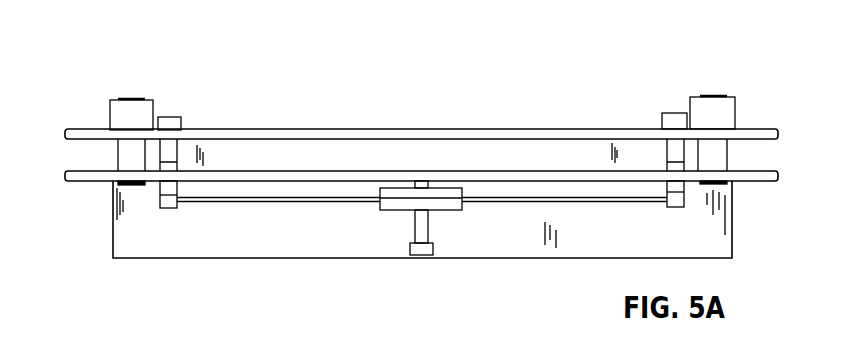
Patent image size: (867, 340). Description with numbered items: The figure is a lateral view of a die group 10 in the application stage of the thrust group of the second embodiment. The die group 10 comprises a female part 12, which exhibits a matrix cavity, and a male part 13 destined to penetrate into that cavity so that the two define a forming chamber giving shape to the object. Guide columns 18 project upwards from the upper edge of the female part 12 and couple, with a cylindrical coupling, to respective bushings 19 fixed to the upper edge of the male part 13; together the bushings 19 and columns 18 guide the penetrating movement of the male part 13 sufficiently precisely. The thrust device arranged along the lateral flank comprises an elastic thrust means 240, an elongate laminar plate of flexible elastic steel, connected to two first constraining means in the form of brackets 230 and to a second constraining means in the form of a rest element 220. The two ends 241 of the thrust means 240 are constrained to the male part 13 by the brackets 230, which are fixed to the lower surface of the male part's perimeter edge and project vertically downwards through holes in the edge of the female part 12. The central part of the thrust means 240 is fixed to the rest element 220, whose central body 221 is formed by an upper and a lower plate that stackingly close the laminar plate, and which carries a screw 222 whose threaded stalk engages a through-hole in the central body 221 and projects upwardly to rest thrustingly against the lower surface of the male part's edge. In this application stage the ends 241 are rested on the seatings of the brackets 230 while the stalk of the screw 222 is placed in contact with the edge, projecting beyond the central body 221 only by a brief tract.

The die group 10 is at (530, 89).
The female part 12 is at (248, 252).
The male part 13 is at (250, 128).
The guide columns 18 is at (117, 157).
The bushings 19 is at (108, 118).
The rest element 220 is at (400, 251).
The central body 221 is at (443, 205).
The screw 222 is at (413, 227).
The brackets 230 is at (160, 192).
The elastic thrust means 240 is at (419, 194).
The ends of the thrust means 241 is at (202, 202).